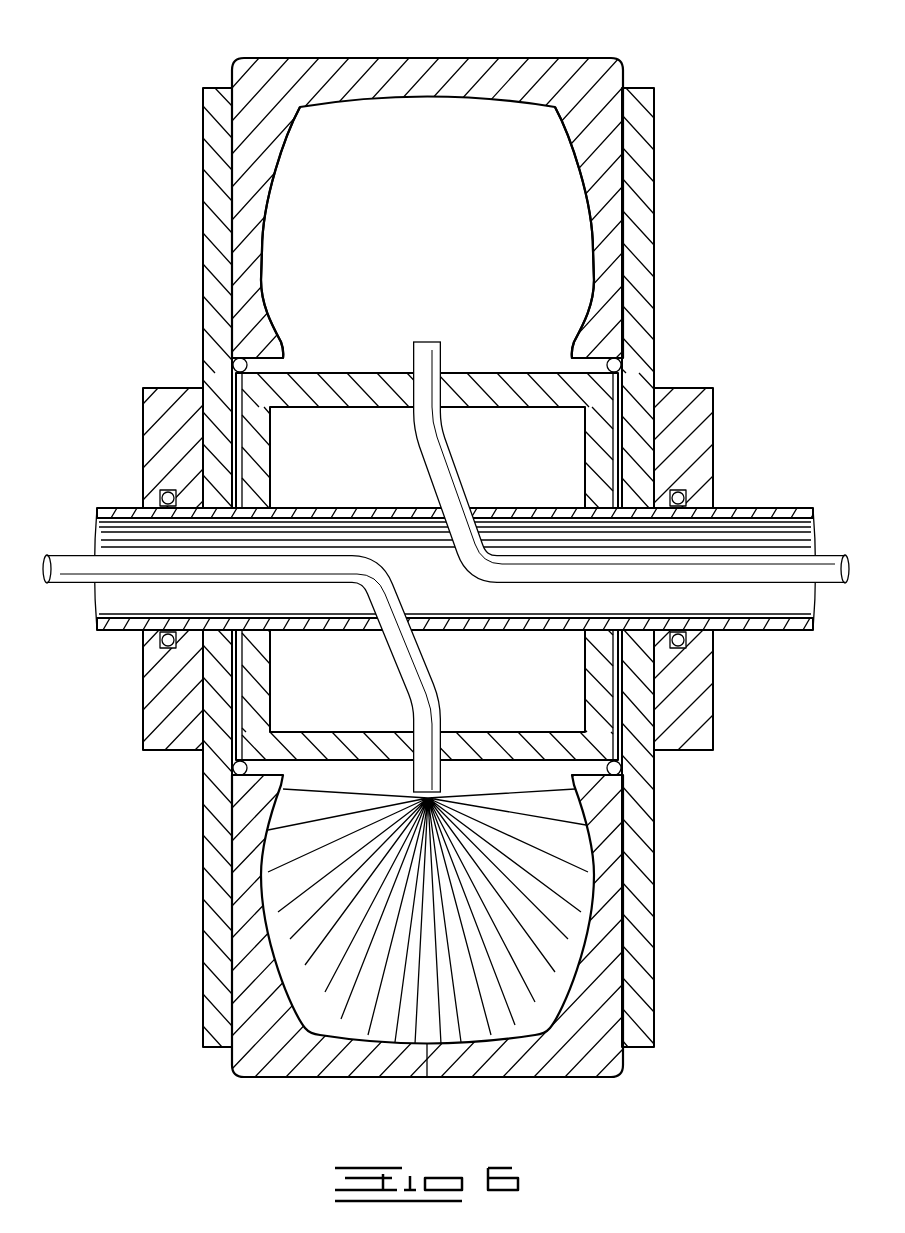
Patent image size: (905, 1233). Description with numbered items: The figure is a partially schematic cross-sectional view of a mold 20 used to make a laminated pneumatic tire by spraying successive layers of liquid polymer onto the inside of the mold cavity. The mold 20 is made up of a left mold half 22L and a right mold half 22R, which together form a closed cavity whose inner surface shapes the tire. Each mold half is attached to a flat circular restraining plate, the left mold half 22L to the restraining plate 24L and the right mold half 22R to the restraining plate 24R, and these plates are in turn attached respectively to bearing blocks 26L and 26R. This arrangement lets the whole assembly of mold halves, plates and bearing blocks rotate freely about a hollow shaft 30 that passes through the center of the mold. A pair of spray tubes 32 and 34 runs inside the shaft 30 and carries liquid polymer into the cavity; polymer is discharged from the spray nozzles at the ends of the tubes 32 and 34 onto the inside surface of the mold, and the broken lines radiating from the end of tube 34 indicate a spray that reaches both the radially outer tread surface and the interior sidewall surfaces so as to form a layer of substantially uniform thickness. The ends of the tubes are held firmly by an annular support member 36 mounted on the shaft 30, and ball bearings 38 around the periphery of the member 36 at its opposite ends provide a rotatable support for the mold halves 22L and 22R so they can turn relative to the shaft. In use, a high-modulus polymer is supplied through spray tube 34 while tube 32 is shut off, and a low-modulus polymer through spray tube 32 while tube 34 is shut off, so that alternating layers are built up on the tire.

The mold 20 is at (265, 45).
The left mold half 22L is at (272, 190).
The right mold half 22R is at (586, 192).
The flat circular restraining plate 24L is at (208, 165).
The flat circular restraining plate 24R is at (650, 160).
The bearing block 26L is at (152, 412).
The bearing block 26R is at (706, 412).
The hollow shaft 30 is at (112, 602).
The spray tube 32 is at (450, 455).
The spray tube 34 is at (412, 683).
The annular support member 36 is at (357, 400).
The ball bearings 38 is at (234, 362).